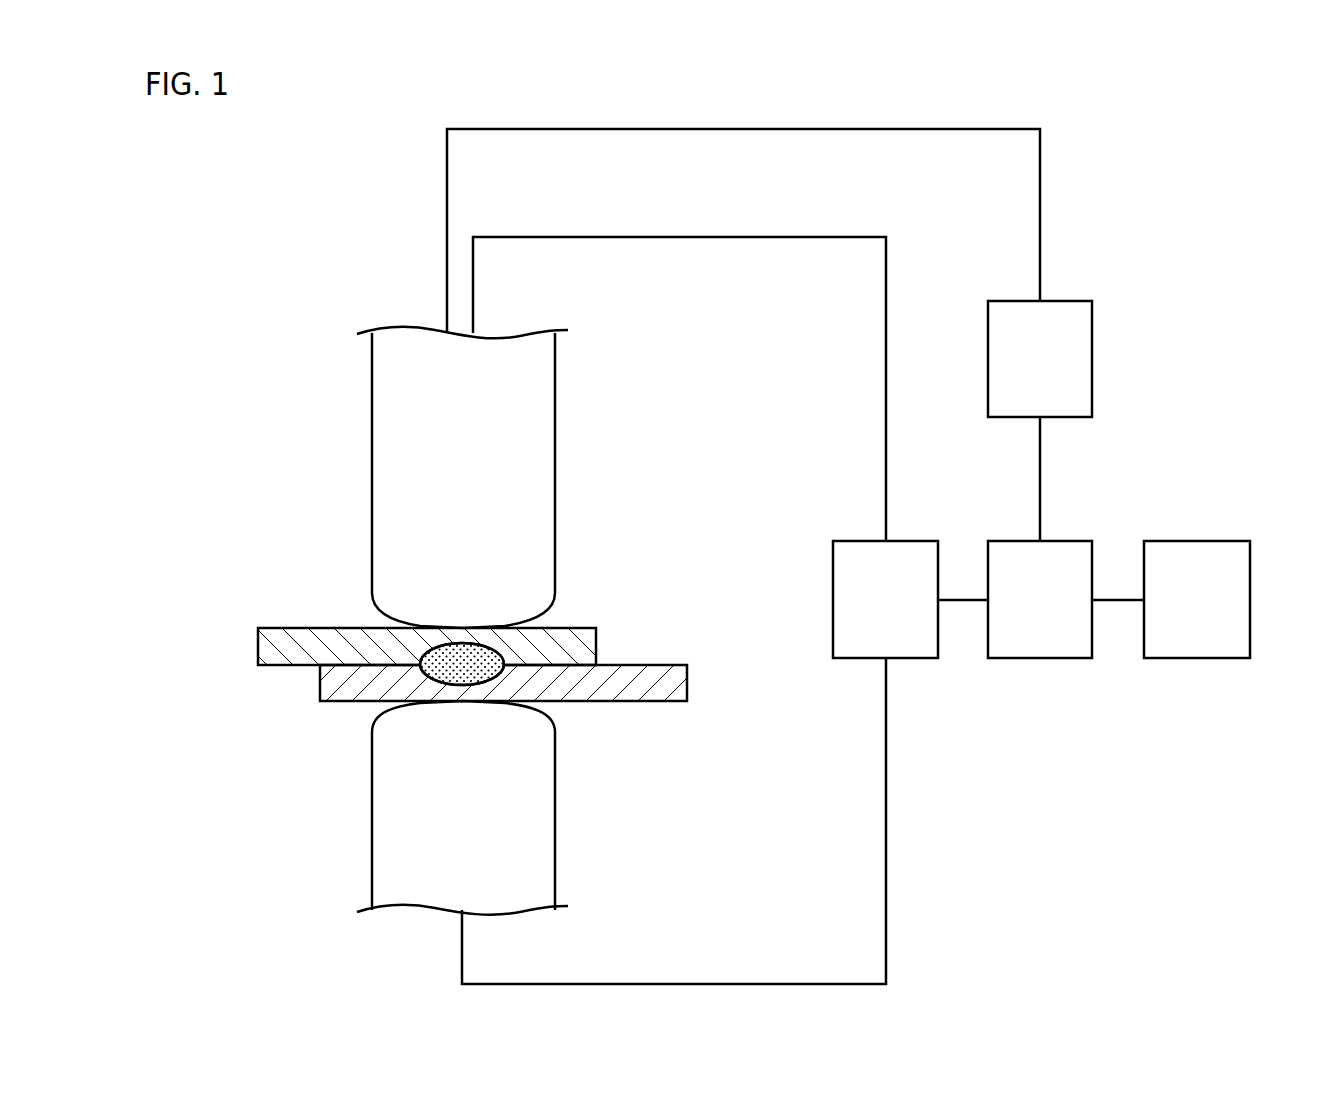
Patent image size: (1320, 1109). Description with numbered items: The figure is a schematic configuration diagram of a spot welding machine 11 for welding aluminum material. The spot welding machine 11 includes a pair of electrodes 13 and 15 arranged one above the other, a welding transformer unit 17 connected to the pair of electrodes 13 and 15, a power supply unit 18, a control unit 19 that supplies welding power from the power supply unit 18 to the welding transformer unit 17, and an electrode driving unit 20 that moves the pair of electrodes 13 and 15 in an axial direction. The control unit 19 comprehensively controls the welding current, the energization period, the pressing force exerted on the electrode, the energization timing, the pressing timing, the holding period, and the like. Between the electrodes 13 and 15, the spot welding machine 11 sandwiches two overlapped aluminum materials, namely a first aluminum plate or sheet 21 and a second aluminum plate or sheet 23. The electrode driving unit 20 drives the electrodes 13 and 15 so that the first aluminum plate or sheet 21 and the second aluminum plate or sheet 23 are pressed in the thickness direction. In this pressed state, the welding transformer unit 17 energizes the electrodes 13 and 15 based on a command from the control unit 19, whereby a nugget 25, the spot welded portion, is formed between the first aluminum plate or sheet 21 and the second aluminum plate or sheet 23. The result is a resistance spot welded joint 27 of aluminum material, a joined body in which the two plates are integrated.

The spot welding machine 11 is at (318, 278).
The electrode 13 is at (555, 427).
The electrode 15 is at (555, 866).
The welding transformer unit 17 is at (915, 540).
The power supply unit 18 is at (1224, 540).
The control unit 19 is at (1076, 540).
The electrode driving unit 20 is at (1075, 300).
The first aluminum plate or sheet 21 is at (580, 628).
The second aluminum plate or sheet 23 is at (655, 701).
The nugget 25 is at (440, 671).
The resistance spot welded joint 27 is at (265, 616).